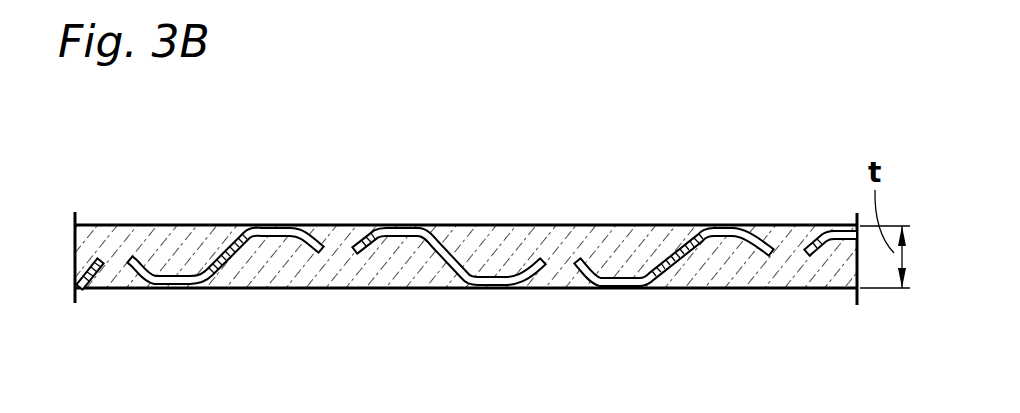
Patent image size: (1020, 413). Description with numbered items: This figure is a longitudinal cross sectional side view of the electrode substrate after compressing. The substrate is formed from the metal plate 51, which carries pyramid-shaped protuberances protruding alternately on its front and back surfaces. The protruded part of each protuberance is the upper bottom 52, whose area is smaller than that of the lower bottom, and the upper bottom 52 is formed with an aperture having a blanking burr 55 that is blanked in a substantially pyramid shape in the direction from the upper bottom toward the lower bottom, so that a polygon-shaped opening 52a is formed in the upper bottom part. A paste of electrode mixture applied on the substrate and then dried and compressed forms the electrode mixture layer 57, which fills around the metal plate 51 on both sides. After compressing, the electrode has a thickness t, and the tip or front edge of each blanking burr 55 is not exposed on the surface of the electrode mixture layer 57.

The metal plate 51 is at (288, 190).
The upper bottom 52 is at (182, 290).
The opening 52a is at (348, 200).
The blanking burr 55 is at (550, 287).
The electrode mixture layer 57 is at (163, 225).